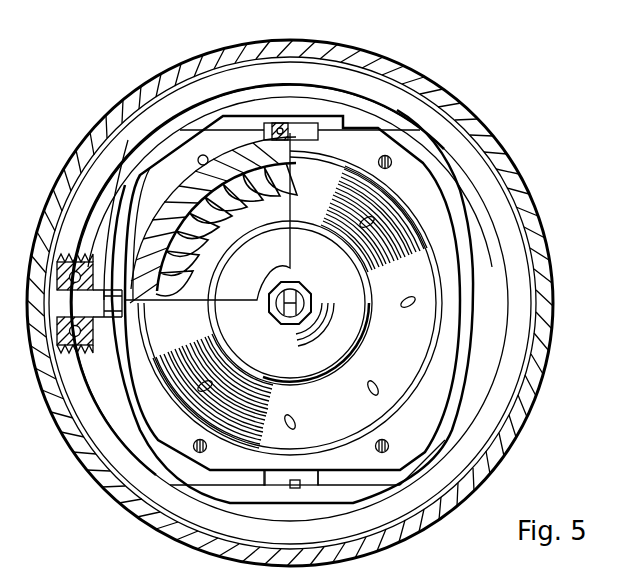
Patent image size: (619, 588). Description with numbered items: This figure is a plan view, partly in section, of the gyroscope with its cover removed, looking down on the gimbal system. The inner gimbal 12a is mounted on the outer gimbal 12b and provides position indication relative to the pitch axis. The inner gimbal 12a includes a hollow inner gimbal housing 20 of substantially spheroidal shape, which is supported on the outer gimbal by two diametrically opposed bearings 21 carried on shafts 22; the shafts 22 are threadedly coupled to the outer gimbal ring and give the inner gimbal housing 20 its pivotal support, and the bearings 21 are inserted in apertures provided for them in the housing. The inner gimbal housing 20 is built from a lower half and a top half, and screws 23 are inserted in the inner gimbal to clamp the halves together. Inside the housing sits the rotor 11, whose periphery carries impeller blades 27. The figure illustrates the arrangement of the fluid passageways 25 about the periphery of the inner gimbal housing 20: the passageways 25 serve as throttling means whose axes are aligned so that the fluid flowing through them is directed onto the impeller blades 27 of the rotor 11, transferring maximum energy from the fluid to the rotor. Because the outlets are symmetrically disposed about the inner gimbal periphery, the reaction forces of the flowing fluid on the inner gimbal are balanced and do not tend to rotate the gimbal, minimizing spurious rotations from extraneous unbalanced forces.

The rotor 11 is at (187, 230).
The inner gimbal 12a is at (410, 275).
The outer gimbal 12b is at (458, 235).
The inner gimbal housing 20 is at (222, 140).
The bearings 21 is at (280, 123).
The shafts 22 is at (293, 118).
The screws 23 is at (388, 160).
The fluid passageways 25 is at (414, 300).
The impeller blades 27 is at (283, 186).